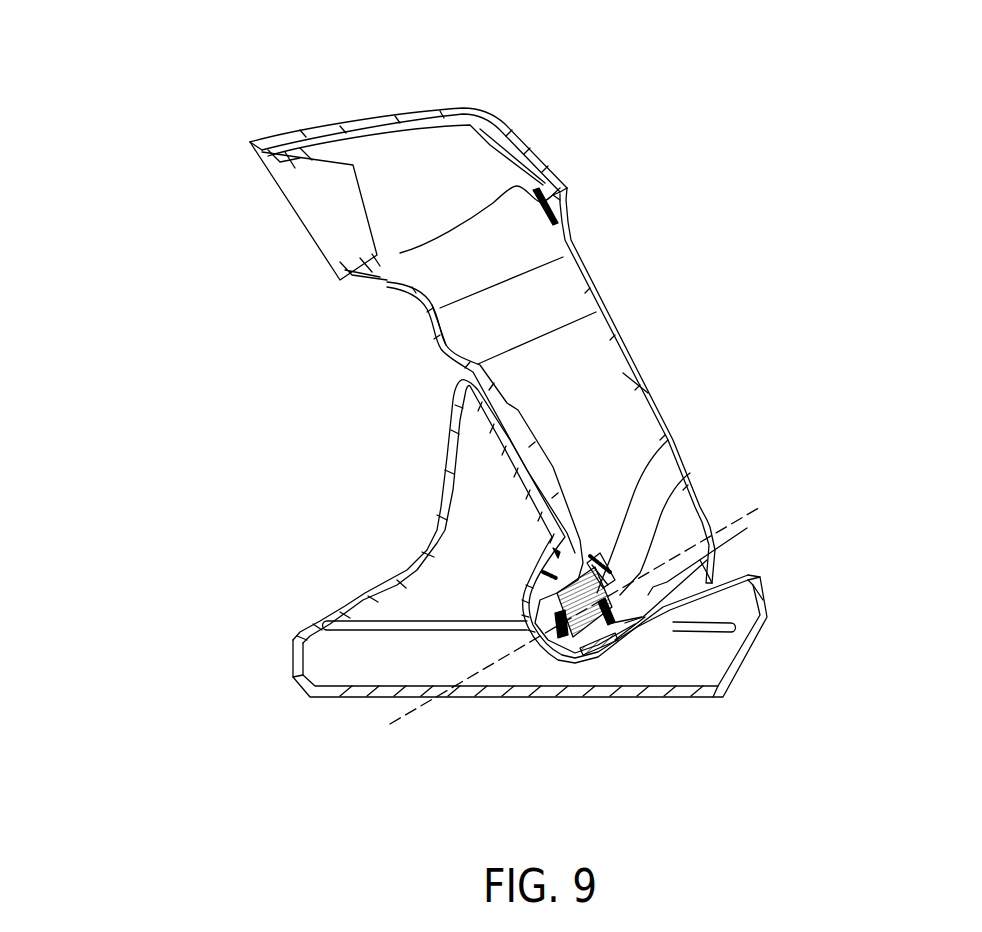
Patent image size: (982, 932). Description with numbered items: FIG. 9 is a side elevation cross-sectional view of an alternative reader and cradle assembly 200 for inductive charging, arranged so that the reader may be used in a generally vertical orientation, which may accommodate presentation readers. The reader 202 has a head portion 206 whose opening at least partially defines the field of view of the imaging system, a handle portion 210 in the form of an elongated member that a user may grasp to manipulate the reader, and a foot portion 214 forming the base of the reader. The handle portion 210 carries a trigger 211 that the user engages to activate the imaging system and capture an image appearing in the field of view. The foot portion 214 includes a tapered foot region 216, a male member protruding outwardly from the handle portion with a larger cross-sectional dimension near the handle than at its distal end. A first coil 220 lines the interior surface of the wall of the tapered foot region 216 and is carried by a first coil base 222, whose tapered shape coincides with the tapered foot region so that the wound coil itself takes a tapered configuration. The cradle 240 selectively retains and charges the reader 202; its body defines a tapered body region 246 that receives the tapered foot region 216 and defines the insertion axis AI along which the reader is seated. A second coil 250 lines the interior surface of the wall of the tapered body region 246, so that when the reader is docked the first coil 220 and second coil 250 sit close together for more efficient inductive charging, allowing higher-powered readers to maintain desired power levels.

The reader and cradle assembly 200 is at (168, 60).
The reader 202 is at (598, 300).
The head portion 206 is at (486, 108).
The handle portion 210 is at (617, 387).
The trigger 211 is at (437, 338).
The foot portion 214 is at (748, 527).
The tapered foot region 216 is at (660, 641).
The first coil 220 is at (668, 440).
The first coil base 222 is at (690, 473).
The cradle 240 is at (755, 638).
The tapered body region 246 is at (529, 574).
The second coil 250 is at (595, 652).
The insertion axis AI is at (398, 722).